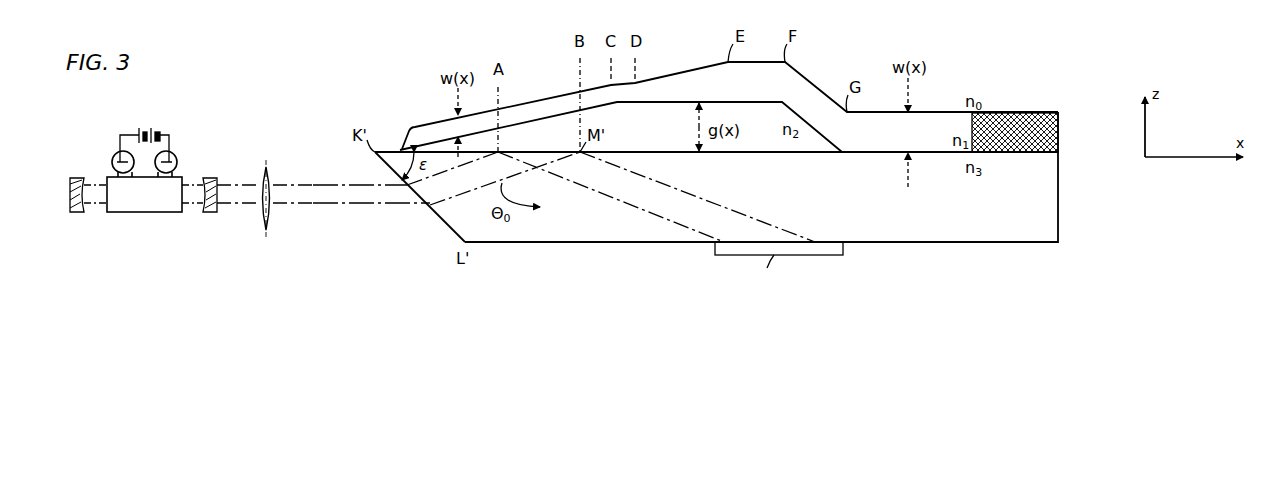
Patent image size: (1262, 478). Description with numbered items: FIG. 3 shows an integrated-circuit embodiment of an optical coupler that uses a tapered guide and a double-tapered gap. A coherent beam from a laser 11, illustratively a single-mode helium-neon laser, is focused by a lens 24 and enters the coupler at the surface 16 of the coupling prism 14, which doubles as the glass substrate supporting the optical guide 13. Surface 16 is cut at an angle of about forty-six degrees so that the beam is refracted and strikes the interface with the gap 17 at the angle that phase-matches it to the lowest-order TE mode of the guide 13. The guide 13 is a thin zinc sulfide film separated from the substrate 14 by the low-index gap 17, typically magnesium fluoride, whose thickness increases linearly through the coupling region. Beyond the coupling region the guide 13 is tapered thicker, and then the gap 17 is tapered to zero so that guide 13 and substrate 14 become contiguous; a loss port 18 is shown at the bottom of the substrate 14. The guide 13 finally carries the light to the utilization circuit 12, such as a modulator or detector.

The laser 11 is at (159, 244).
The utilization circuit 12 is at (1060, 132).
The optical guide 13 is at (527, 108).
The coupling prism and substrate 14 is at (640, 236).
The surface 16 is at (447, 229).
The gap 17 is at (662, 117).
The loss port 18 is at (843, 246).
The lens 24 is at (267, 168).